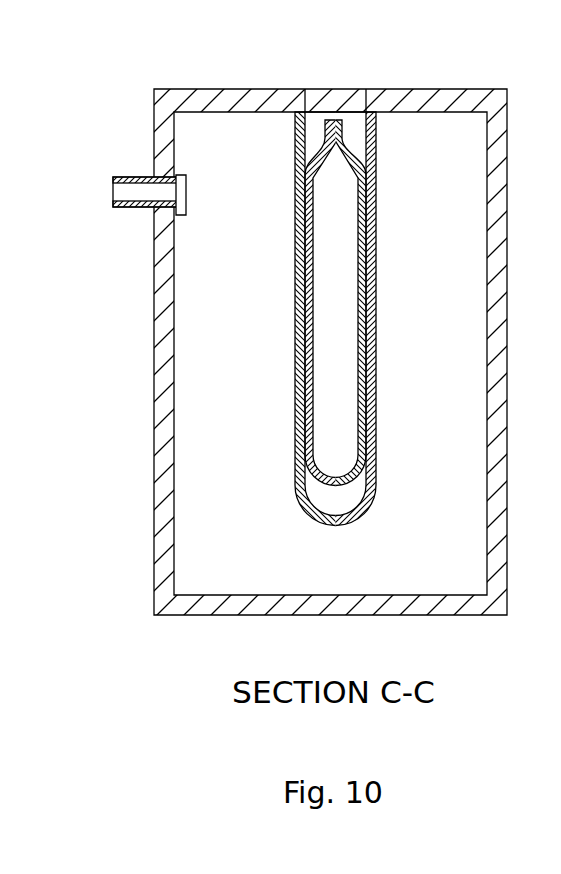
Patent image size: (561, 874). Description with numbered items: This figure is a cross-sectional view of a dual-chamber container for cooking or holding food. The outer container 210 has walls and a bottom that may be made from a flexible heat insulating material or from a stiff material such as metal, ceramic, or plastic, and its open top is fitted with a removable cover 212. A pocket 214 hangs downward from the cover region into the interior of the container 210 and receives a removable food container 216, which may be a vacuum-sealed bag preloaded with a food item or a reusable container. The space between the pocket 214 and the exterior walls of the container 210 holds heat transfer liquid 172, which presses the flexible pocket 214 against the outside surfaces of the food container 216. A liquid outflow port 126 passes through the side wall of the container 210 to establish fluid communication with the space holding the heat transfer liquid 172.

The liquid outflow port 126 is at (113, 207).
The heat transfer liquid 172 is at (193, 518).
The outer container 210 is at (155, 338).
The removable cover 212 is at (427, 89).
The pocket 214 is at (311, 122).
The removable food container 216 is at (344, 122).